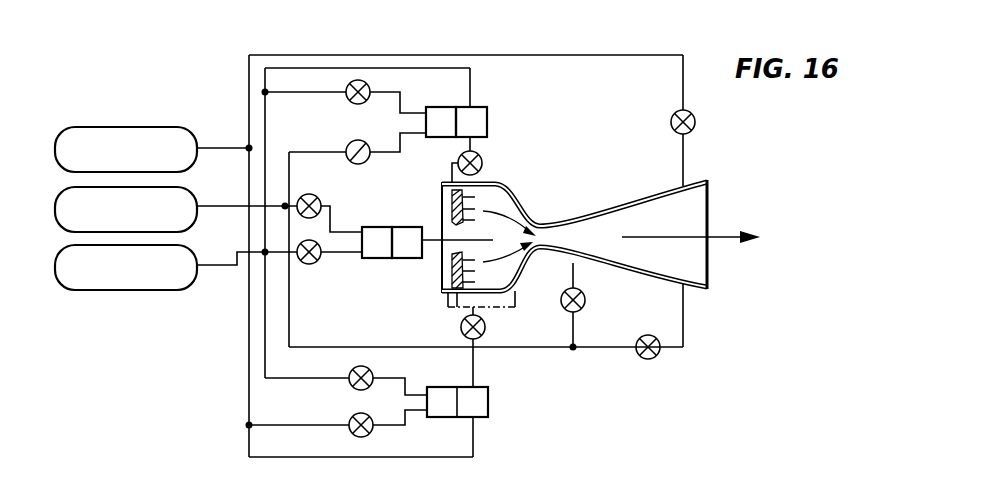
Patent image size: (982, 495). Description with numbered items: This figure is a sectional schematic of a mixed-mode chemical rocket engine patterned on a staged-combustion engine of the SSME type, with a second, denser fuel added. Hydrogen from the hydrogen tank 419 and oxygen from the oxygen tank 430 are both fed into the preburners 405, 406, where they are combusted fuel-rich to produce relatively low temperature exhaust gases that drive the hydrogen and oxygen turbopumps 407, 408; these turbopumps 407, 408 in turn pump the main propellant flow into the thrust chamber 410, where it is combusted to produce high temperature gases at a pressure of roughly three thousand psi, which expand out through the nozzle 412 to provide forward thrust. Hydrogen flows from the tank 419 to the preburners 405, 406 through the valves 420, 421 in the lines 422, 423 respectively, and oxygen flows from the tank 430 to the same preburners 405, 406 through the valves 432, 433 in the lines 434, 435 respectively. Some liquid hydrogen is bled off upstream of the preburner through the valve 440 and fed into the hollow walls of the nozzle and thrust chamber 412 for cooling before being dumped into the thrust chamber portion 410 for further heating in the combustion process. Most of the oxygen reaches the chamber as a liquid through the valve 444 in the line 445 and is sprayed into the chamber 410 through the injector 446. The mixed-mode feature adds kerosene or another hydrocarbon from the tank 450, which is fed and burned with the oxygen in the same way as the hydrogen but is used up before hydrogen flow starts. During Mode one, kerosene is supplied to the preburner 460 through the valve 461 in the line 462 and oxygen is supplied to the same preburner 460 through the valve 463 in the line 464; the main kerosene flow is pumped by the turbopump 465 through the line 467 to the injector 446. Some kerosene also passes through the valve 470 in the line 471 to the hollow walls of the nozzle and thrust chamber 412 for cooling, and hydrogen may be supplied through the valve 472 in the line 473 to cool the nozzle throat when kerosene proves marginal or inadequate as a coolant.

The preburner 405 is at (375, 258).
The preburner 406 is at (452, 92).
The hydrogen turbopump 407 is at (424, 227).
The oxygen turbopump 408 is at (487, 118).
The thrust chamber 410 is at (500, 200).
The nozzle 412 is at (548, 222).
The hydrogen tank 419 is at (210, 185).
The valve 420 is at (309, 194).
The valve 421 is at (370, 135).
The line 422 is at (330, 212).
The line 423 is at (289, 152).
The oxygen tank 430 is at (175, 290).
The valve 432 is at (309, 264).
The line 434 is at (345, 255).
The line 435 is at (300, 92).
The valve 433 is at (350, 82).
The valve 440 is at (651, 359).
The valve 444 is at (482, 155).
The line 445 is at (475, 68).
The injector 446 is at (445, 186).
The tank 450 is at (165, 128).
The preburner 460 is at (361, 441).
The valve 461 is at (364, 435).
The line 462 is at (330, 425).
The valve 463 is at (373, 373).
The line 464 is at (330, 378).
The turbopump 465 is at (488, 400).
The line 467 is at (473, 367).
The valve 470 is at (695, 122).
The line 471 is at (685, 55).
The valve 472 is at (586, 300).
The line 473 is at (574, 340).